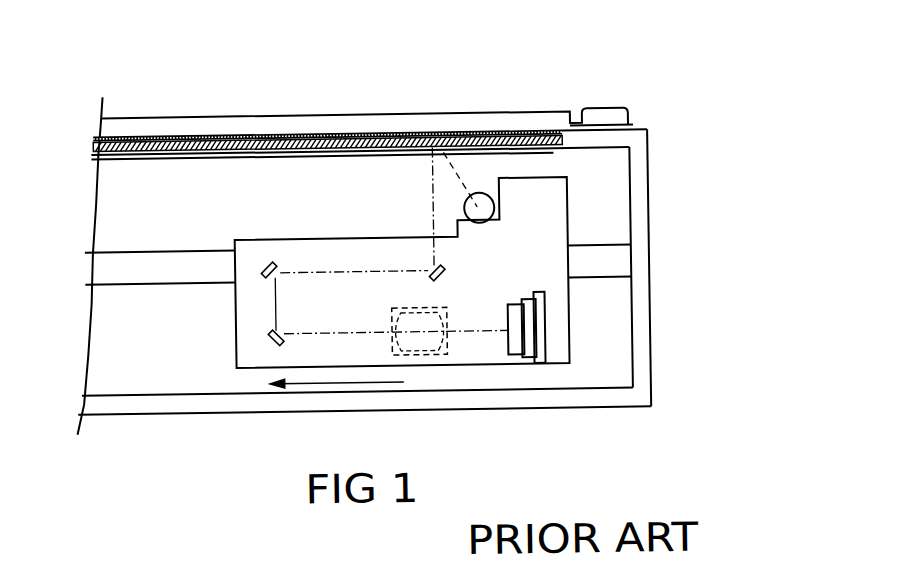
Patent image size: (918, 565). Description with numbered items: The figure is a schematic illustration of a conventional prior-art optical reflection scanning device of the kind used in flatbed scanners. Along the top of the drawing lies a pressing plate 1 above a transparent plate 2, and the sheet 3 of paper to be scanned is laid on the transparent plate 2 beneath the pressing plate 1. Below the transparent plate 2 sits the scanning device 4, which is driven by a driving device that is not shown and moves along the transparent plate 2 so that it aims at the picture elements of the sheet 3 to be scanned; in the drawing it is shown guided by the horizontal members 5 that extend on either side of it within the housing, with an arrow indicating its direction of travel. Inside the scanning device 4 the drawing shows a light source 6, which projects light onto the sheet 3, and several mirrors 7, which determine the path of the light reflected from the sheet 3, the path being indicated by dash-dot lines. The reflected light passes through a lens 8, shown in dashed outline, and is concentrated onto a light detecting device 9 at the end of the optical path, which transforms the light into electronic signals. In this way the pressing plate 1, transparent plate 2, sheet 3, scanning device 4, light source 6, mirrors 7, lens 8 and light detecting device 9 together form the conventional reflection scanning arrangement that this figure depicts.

The pressing plate 1 is at (529, 127).
The transparent plate 2 is at (204, 130).
The sheet 3 is at (384, 132).
The scanning device 4 is at (482, 344).
The guide rails 5 is at (614, 266).
The light source 6 is at (496, 211).
The mirrors 7 is at (268, 261).
The lens 8 is at (417, 345).
The light detecting device 9 is at (539, 329).